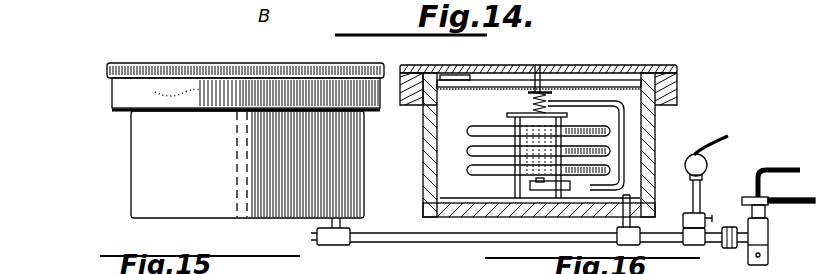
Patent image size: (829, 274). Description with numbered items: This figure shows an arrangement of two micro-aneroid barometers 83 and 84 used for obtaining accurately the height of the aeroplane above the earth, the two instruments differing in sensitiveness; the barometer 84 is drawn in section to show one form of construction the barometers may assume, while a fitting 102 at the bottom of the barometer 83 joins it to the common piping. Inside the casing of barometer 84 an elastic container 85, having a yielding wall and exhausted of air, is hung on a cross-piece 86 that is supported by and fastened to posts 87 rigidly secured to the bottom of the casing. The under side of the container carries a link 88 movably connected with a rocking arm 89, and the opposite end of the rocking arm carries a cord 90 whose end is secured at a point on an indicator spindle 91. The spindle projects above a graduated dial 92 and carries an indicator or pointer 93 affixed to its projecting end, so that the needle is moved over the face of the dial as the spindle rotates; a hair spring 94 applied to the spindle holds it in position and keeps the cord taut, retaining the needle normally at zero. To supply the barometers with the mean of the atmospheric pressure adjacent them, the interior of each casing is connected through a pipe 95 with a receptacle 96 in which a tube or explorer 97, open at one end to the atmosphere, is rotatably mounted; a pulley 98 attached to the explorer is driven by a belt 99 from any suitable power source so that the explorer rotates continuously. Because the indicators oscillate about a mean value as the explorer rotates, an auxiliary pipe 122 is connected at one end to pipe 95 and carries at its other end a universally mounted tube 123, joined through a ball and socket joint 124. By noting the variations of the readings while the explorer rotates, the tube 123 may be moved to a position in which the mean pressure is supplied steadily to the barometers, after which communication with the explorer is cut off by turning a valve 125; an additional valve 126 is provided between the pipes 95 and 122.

The micro-aneroid barometer 83 is at (245, 140).
The pipe fitting 102 is at (330, 122).
The micro-aneroid barometer 84 is at (424, 163).
The elastic container 85 is at (470, 132).
The cross-piece 86 is at (508, 115).
The posts 87 is at (566, 125).
The link 88 is at (530, 186).
The rocking arm 89 is at (630, 201).
The cord 90 is at (564, 98).
The indicator spindle 91 is at (539, 72).
The graduated dial 92 is at (612, 140).
The indicator or pointer 93 is at (585, 80).
The hair spring 94 is at (534, 104).
The pipe 95 is at (455, 243).
The receptacle 96 is at (768, 250).
The tube or explorer 97 is at (774, 168).
The pulley 98 is at (768, 205).
The belt 99 is at (791, 191).
The pipe 122 is at (702, 192).
The universally mounted tube 123 is at (711, 136).
The ball and socket joint 124 is at (688, 162).
The valve 125 is at (728, 249).
The valve 126 is at (706, 215).